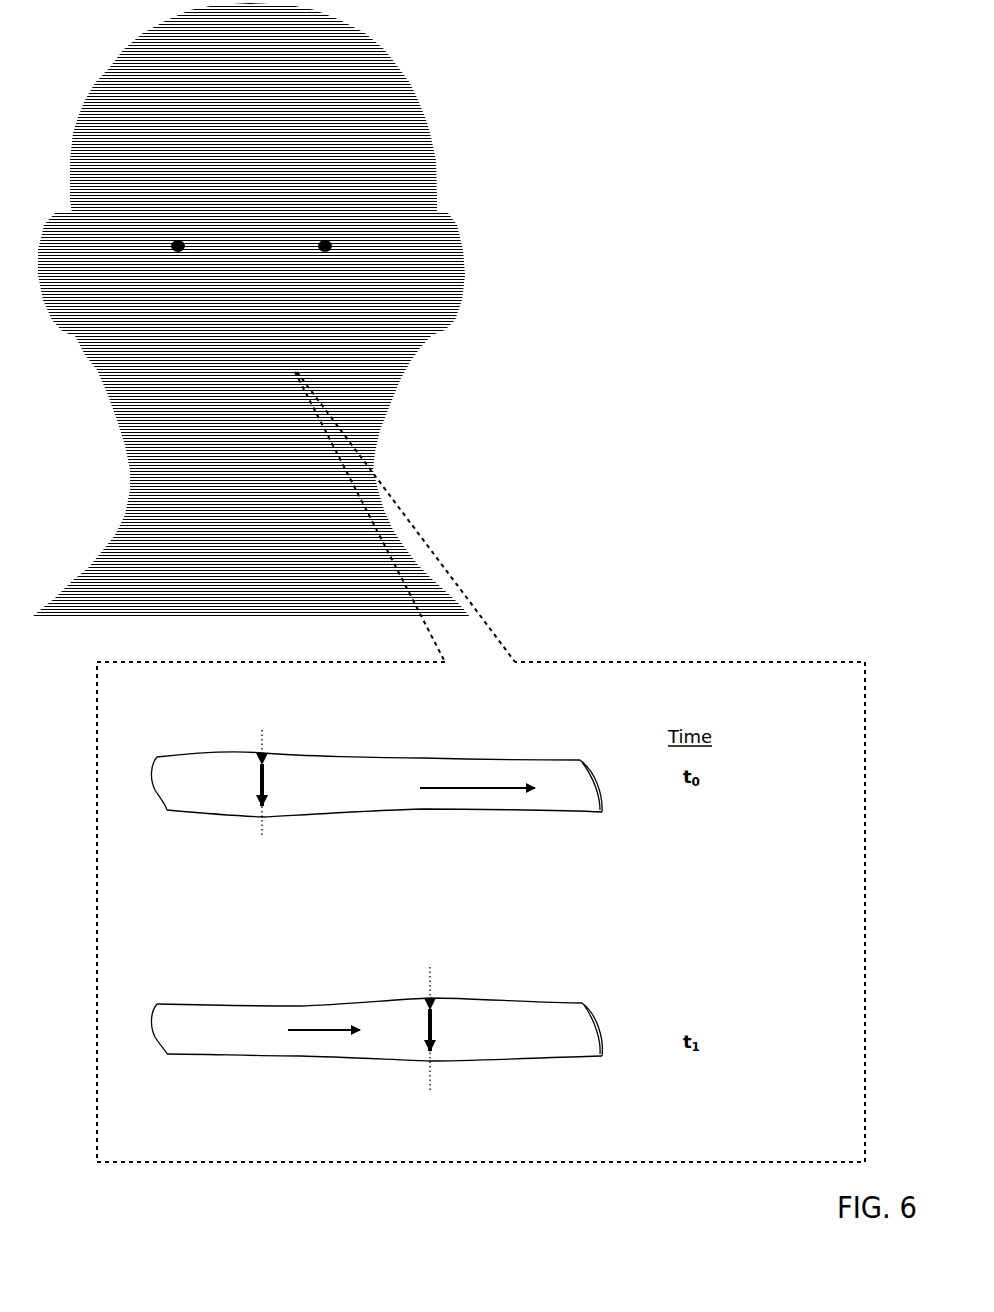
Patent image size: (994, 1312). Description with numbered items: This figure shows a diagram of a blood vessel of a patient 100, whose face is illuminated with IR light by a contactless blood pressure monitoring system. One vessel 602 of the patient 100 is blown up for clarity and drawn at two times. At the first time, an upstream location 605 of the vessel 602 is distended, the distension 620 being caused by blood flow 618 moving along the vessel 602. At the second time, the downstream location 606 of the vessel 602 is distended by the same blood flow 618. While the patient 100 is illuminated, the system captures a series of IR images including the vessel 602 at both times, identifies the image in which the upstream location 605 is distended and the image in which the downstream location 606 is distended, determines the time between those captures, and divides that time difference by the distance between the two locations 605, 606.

The patient 100 is at (462, 65).
The vessel 602 is at (500, 743).
The upstream location 605 is at (278, 898).
The downstream location 606 is at (446, 1141).
The blood flow 618 is at (415, 796).
The distension 620 is at (421, 1030).